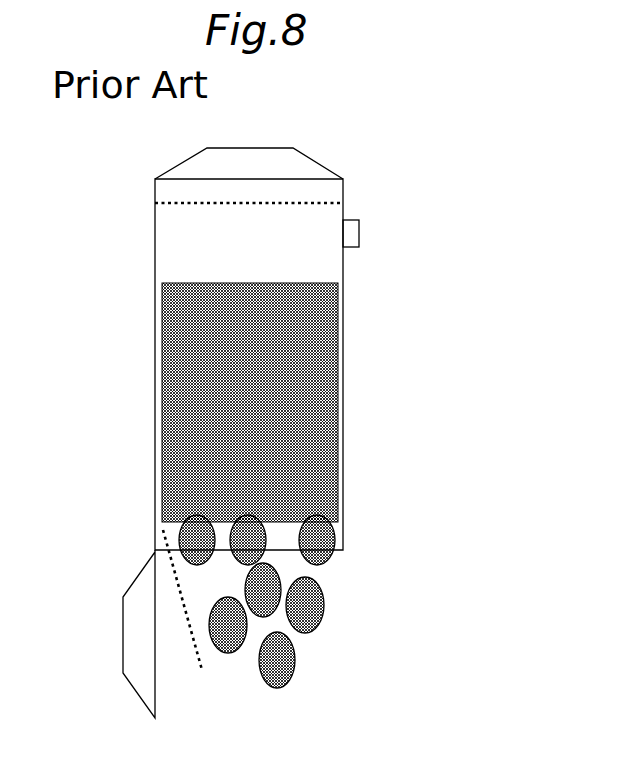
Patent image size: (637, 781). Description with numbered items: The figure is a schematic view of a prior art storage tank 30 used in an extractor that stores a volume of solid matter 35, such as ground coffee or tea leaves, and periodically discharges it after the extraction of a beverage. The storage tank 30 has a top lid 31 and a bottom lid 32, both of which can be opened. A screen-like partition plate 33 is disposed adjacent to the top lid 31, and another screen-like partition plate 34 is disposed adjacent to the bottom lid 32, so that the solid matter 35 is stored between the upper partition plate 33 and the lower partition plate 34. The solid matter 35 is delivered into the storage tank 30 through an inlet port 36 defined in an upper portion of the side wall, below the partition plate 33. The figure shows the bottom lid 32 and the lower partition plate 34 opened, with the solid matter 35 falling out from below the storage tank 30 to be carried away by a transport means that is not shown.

The storage tank 30 is at (380, 196).
The top lid 31 is at (285, 160).
The bottom lid 32 is at (138, 667).
The screen-like partition plate 33 is at (323, 203).
The screen-like partition plate 34 is at (198, 660).
The solid matter 35 is at (336, 405).
The inlet port 36 is at (352, 233).